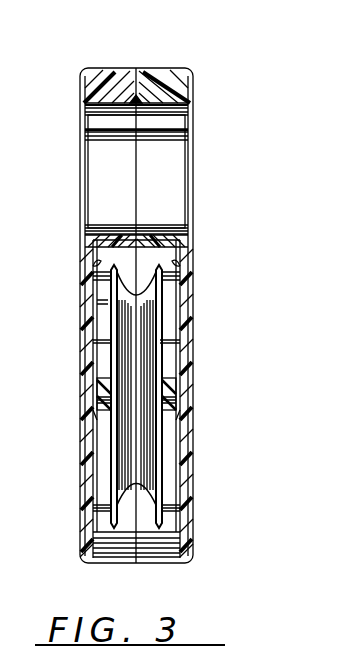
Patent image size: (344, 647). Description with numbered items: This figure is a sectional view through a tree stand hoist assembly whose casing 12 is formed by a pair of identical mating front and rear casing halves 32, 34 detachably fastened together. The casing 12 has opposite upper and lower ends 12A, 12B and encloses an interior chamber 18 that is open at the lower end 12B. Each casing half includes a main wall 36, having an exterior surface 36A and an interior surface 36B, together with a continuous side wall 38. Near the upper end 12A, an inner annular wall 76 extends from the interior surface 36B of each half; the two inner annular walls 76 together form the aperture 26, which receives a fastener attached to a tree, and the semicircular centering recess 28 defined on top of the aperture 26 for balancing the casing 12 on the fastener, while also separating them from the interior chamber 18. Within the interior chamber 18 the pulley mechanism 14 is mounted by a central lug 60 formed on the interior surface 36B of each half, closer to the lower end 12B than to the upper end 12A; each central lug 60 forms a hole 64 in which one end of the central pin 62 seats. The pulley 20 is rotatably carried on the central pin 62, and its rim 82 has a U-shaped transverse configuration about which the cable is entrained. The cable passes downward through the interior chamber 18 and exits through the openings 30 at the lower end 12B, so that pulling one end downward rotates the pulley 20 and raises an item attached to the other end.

The casing 12 is at (196, 247).
The upper end 12A is at (146, 68).
The lower end 12B is at (118, 566).
The pulley mechanism 14 is at (164, 314).
The interior chamber 18 is at (102, 305).
The pulley 20 is at (163, 476).
The aperture 26 is at (160, 154).
The centering recess 28 is at (168, 118).
The opening 30 is at (170, 566).
The front casing half 32 is at (194, 181).
The rear casing half 34 is at (84, 218).
The main wall 36 is at (87, 342).
The exterior surface 36A is at (86, 486).
The interior surface 36B is at (92, 262).
The side wall 38 is at (110, 71).
The central lug 60 is at (93, 430).
The central pin 62 is at (178, 388).
The hole 64 is at (102, 400).
The inner annular wall 76 is at (96, 172).
The rim 82 is at (165, 516).